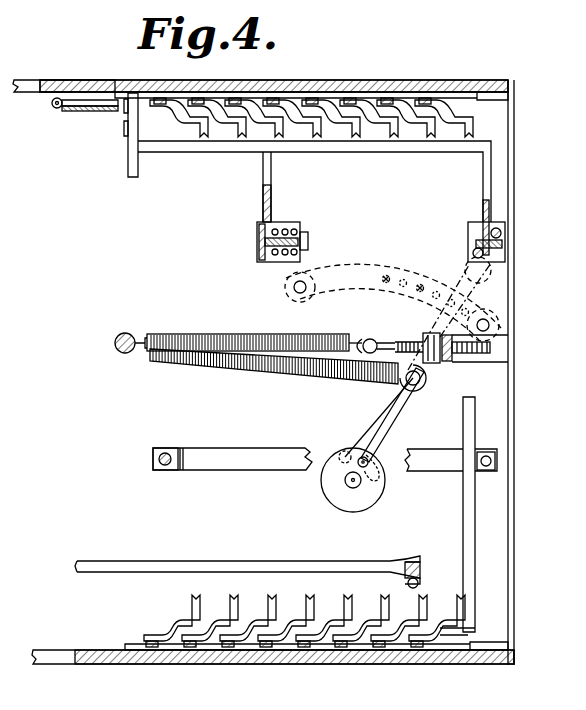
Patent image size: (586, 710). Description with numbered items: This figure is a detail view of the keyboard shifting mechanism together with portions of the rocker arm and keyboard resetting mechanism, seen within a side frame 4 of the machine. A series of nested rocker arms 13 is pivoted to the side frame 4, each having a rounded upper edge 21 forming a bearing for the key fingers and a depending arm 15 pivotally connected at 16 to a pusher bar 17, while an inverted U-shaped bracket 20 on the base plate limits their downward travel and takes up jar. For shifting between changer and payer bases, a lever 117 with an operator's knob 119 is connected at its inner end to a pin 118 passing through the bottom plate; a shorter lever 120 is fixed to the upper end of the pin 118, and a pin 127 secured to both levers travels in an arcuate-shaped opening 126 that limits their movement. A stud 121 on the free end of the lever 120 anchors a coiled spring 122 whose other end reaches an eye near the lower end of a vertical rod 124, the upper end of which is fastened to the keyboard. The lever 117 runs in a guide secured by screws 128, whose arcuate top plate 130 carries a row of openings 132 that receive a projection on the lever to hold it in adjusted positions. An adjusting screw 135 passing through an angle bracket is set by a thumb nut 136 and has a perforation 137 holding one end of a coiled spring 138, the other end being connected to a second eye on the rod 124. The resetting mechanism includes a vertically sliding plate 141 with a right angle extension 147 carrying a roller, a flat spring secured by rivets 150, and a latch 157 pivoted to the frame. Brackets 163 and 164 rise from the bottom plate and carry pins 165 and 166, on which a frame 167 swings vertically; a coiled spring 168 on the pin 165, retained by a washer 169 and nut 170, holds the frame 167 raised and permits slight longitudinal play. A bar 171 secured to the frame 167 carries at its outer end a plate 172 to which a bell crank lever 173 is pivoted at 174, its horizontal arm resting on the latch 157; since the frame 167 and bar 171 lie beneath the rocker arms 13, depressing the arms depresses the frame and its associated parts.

The side frame 4 is at (445, 80).
The rocker arm 13 is at (372, 105).
The depending arm 15 is at (425, 570).
The pivot connection 16 is at (412, 562).
The pusher bar 17 is at (280, 552).
The inverted U-shaped bracket 20 is at (270, 462).
The rounded upper edge 21 is at (475, 520).
The lever 117 is at (480, 298).
The pin 118 is at (350, 483).
The knob 119 is at (492, 272).
The lever 120 is at (400, 419).
The stud 121 is at (427, 378).
The coiled spring 122 is at (321, 378).
The rod 124 is at (122, 353).
The arcuate-shaped opening 126 is at (343, 452).
The pin 127 is at (367, 460).
The screws 128 is at (294, 288).
The top plate 130 is at (369, 274).
The openings 132 is at (422, 286).
The adjusting screw 135 is at (485, 346).
The thumb nut 136 is at (465, 357).
The perforation 137 is at (373, 340).
The coiled spring 138 is at (300, 324).
The plate 141 is at (90, 111).
The right angle extension 147 is at (66, 106).
The rivets 150 is at (51, 103).
The latch 157 is at (80, 100).
The bracket 163 is at (257, 237).
The bracket 164 is at (505, 225).
The pin 165 is at (282, 236).
The pin 166 is at (502, 246).
The frame 167 is at (272, 190).
The coiled spring 168 is at (280, 254).
The washer 169 is at (300, 232).
The nut 170 is at (308, 244).
The bar 171 is at (194, 143).
The plate 172 is at (128, 150).
The bell crank lever 173 is at (124, 118).
The pivot 174 is at (122, 133).